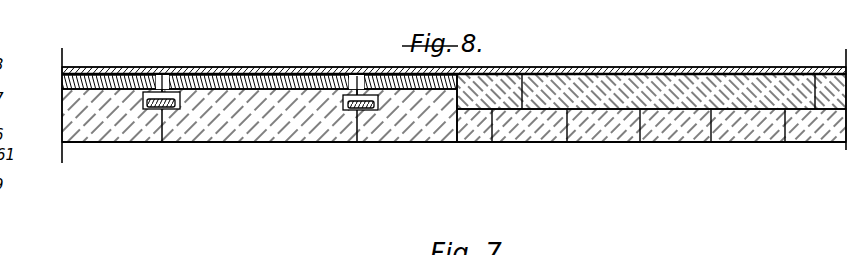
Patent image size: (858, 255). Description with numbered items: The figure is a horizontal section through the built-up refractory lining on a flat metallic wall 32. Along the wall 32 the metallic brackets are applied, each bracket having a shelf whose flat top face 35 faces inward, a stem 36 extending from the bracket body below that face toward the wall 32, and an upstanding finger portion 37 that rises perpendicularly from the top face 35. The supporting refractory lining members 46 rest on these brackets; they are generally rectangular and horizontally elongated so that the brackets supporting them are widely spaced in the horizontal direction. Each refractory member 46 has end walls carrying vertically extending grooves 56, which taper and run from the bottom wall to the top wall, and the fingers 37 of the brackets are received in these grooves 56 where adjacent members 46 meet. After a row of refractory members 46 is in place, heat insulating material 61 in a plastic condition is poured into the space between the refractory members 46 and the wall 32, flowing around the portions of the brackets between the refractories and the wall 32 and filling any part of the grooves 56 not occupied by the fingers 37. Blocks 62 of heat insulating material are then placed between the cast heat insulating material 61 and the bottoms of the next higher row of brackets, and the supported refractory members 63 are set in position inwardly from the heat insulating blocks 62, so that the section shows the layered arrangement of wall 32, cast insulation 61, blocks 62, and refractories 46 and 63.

The flat metallic wall 32 is at (252, 71).
The flat top face 35 is at (208, 71).
The stem 36 is at (165, 77).
The finger portion 37 is at (163, 108).
The supporting refractory lining member 46 is at (113, 132).
The vertically extending groove 56 is at (343, 101).
The heat insulating material 61 is at (110, 80).
The heat insulating block 62 is at (508, 80).
The supported refractory member 63 is at (598, 140).